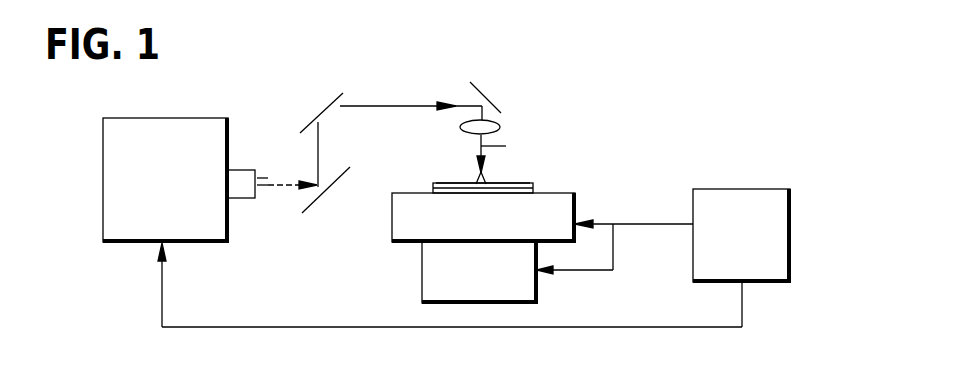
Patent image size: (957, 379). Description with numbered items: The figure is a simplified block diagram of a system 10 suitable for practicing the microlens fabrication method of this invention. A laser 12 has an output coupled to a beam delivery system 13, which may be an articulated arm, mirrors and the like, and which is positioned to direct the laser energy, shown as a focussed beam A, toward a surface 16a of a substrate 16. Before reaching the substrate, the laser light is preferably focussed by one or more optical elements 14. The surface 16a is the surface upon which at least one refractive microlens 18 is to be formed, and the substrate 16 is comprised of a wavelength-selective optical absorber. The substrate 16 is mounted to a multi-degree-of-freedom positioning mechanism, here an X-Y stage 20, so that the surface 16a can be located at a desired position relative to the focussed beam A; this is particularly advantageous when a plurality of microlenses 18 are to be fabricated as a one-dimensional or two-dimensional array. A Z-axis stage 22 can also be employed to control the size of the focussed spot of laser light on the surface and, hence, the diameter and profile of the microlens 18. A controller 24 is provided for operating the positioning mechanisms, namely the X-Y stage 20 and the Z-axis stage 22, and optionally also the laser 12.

The system 10 is at (296, 96).
The laser 12 is at (103, 181).
The beam delivery system 13 is at (400, 92).
The optical element 14 is at (502, 125).
The substrate 16 is at (535, 188).
The surface 16a is at (452, 182).
The refractive microlens 18 is at (483, 178).
The X-Y stage 20 is at (392, 225).
The Z-axis stage 22 is at (537, 290).
The controller 24 is at (790, 255).